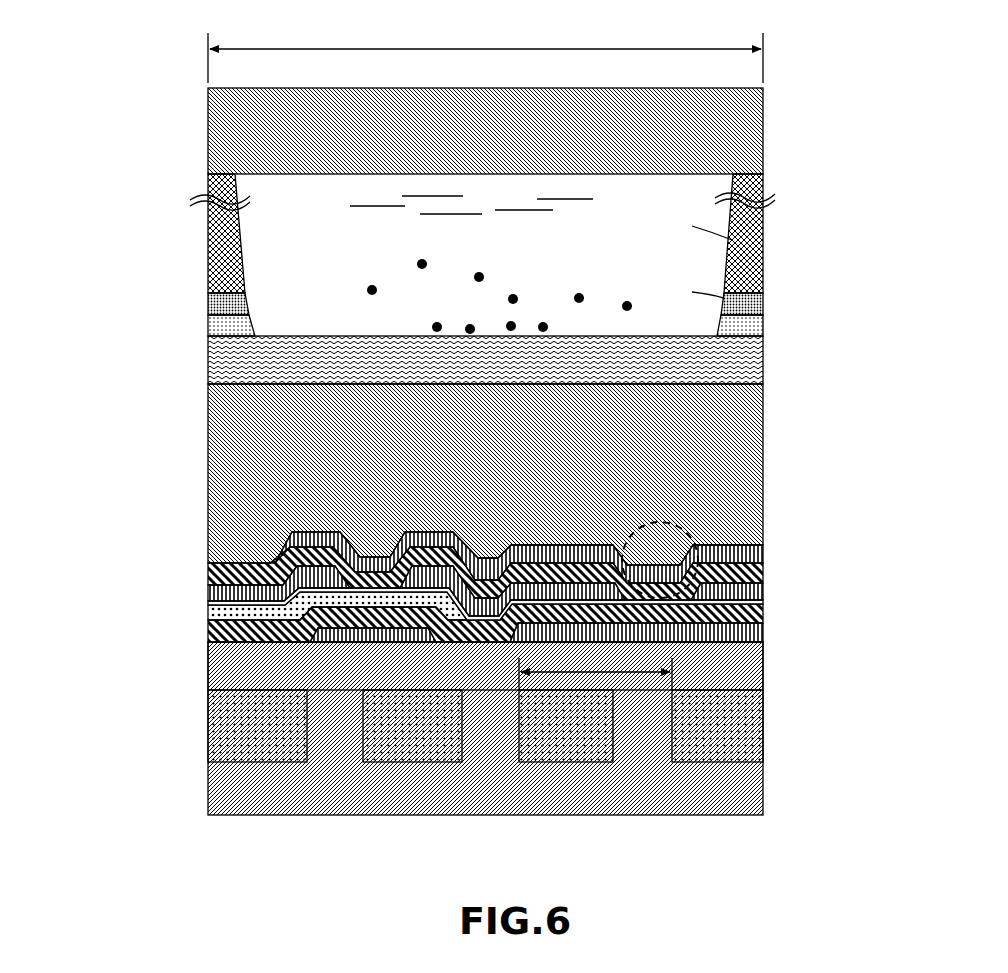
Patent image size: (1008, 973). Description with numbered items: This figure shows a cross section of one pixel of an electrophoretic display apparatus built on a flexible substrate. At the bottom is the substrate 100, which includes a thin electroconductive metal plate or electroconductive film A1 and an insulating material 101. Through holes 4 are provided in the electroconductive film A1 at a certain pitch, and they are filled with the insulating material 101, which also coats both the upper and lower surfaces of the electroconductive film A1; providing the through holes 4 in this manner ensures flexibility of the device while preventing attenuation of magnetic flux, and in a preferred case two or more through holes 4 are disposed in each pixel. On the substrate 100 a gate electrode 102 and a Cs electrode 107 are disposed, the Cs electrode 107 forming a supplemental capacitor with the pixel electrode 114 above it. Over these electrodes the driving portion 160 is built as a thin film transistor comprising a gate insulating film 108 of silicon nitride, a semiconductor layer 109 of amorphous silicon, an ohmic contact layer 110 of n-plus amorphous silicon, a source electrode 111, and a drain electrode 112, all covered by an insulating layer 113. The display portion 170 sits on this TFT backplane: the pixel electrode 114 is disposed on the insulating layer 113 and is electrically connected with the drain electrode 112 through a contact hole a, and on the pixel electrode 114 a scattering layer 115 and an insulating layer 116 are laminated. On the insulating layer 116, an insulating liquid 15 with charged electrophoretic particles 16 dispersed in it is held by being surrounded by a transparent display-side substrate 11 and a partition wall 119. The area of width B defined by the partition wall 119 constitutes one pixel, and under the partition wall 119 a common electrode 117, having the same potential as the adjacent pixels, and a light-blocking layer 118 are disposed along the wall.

The through holes 4 is at (333, 725).
The transparent display-side substrate 11 is at (485, 131).
The insulating liquid 15 is at (620, 185).
The charged electrophoretic particles 16 is at (517, 291).
The substrate 100 is at (200, 647).
The insulating material 101 is at (750, 665).
The gate electrode 102 is at (380, 640).
The Cs electrode 107 is at (763, 632).
The gate insulating film 108 is at (763, 613).
The semiconductor layer 109 is at (207, 616).
The ohmic contact layer 110 is at (763, 602).
The source electrode 111 is at (207, 598).
The drain electrode 112 is at (763, 592).
The insulating layer 113 is at (763, 573).
The pixel electrode 114 is at (763, 553).
The scattering layer 115 is at (763, 470).
The insulating layer 116 is at (763, 357).
The common electrode 117 is at (255, 325).
The light-blocking layer 118 is at (247, 295).
The partition wall 119 is at (242, 231).
The driving portion 160 is at (107, 562).
The display portion 170 is at (175, 90).
The contact hole a is at (643, 525).
The electroconductive film A1 is at (740, 730).
The width of one pixel B is at (485, 44).